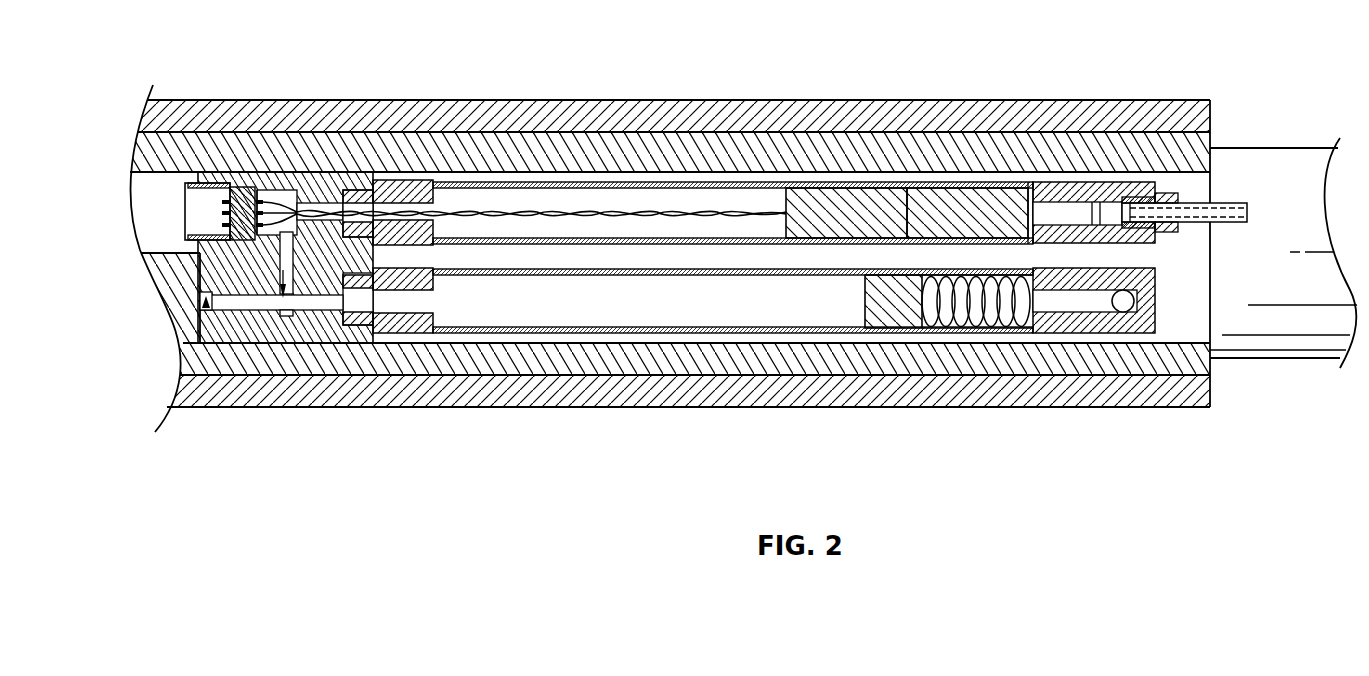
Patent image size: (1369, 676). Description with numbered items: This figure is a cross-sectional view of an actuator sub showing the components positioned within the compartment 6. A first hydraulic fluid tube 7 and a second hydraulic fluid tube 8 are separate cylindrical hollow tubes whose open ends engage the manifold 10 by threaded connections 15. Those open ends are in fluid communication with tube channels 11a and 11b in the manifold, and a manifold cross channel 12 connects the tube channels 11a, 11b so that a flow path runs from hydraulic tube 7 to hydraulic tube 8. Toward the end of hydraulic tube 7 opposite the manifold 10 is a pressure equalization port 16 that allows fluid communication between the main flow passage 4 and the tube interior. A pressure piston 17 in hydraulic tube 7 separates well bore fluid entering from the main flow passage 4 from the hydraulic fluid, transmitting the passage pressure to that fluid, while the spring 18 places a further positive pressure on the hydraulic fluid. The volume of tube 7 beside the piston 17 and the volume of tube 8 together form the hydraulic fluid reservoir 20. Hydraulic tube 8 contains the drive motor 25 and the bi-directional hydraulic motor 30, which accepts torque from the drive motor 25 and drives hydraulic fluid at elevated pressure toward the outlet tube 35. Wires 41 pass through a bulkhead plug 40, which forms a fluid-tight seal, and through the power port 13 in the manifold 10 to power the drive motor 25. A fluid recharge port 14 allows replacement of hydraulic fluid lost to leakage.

The main flow passage 4 is at (1287, 358).
The compartment 6 is at (1185, 330).
The first hydraulic fluid tube 7 is at (600, 333).
The second hydraulic fluid tube 8 is at (620, 182).
The manifold 10 is at (305, 177).
The tube channel 11a is at (312, 305).
The tube channel 11b is at (308, 176).
The manifold cross channel 12 is at (283, 312).
The power port 13 is at (283, 193).
The fluid recharge port 14 is at (206, 308).
The threaded connection 15 is at (360, 327).
The pressure equalization port 16 is at (1123, 308).
The pressure piston 17 is at (883, 322).
The spring 18 is at (973, 332).
The hydraulic fluid reservoir 20 is at (733, 336).
The drive motor 25 is at (797, 203).
The hydraulic motor 30 is at (938, 203).
The outlet tube 35 is at (1160, 197).
The bulkhead plug 40 is at (245, 187).
The wires 41 is at (473, 206).